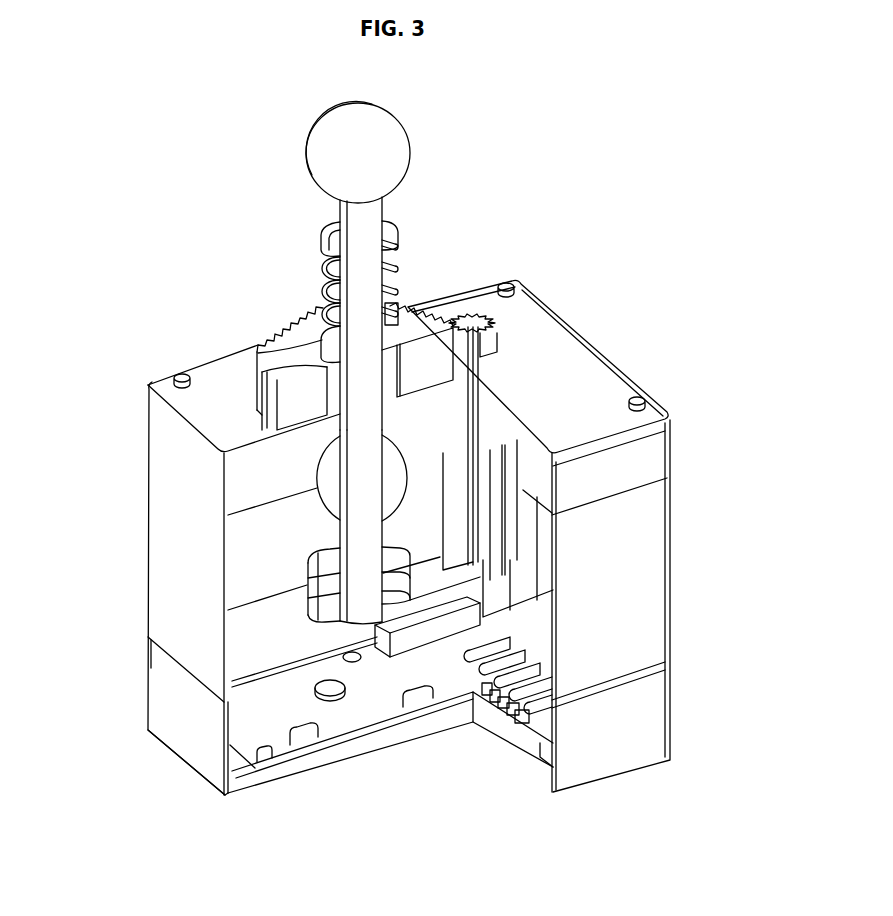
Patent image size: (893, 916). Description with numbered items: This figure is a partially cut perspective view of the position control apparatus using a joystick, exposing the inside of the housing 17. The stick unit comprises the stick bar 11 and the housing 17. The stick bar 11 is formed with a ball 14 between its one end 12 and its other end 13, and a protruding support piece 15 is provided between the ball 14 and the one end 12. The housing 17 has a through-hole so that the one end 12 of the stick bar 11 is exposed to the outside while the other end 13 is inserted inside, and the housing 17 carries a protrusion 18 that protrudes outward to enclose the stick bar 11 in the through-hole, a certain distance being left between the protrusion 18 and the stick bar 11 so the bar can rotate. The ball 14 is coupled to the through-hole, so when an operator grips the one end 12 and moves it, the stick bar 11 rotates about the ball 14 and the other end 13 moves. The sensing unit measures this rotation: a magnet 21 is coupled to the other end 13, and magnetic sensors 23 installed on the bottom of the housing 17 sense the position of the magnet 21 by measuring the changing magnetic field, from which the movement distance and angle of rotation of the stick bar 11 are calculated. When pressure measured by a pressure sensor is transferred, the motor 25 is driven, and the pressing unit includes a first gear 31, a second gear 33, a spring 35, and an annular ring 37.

The stick bar 11 is at (372, 228).
The one end of the stick bar 12 is at (346, 149).
The other end of the stick bar 13 is at (365, 596).
The ball 14 is at (338, 490).
The protruding support piece 15 is at (386, 240).
The housing 17 is at (150, 598).
The protrusion 18 is at (386, 373).
The magnet 21 is at (393, 565).
The magnetic sensors 23 is at (330, 700).
The motor 25 is at (482, 507).
The first gear 31 is at (418, 326).
The second gear 33 is at (476, 333).
The spring 35 is at (326, 272).
The annular ring 37 is at (318, 352).